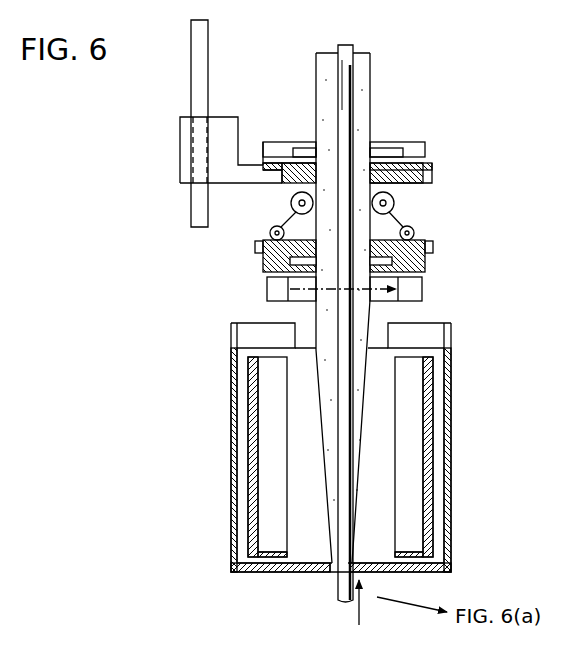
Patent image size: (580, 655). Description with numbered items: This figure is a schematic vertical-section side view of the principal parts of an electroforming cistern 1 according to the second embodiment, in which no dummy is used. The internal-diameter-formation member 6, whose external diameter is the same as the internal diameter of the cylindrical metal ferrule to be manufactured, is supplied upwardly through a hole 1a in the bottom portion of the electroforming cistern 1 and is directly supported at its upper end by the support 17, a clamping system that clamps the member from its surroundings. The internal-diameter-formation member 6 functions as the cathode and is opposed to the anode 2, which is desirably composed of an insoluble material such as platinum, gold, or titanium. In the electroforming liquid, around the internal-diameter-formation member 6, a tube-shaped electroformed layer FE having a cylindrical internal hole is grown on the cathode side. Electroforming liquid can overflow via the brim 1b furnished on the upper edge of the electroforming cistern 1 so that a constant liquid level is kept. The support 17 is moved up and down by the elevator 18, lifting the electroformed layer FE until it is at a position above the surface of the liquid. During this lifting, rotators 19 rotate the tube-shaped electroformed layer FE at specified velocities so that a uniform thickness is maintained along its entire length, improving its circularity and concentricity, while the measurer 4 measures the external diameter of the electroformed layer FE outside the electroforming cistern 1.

The electroforming cistern 1 is at (455, 428).
The hole 1a is at (328, 574).
The brim 1b is at (452, 336).
The anode 2 is at (268, 512).
The measurer 4 is at (267, 289).
The internal-diameter-formation member 6 is at (352, 91).
The support 17 is at (413, 141).
The elevator 18 is at (180, 162).
The rotator 19 is at (407, 214).
The electroformed layer FE is at (322, 403).